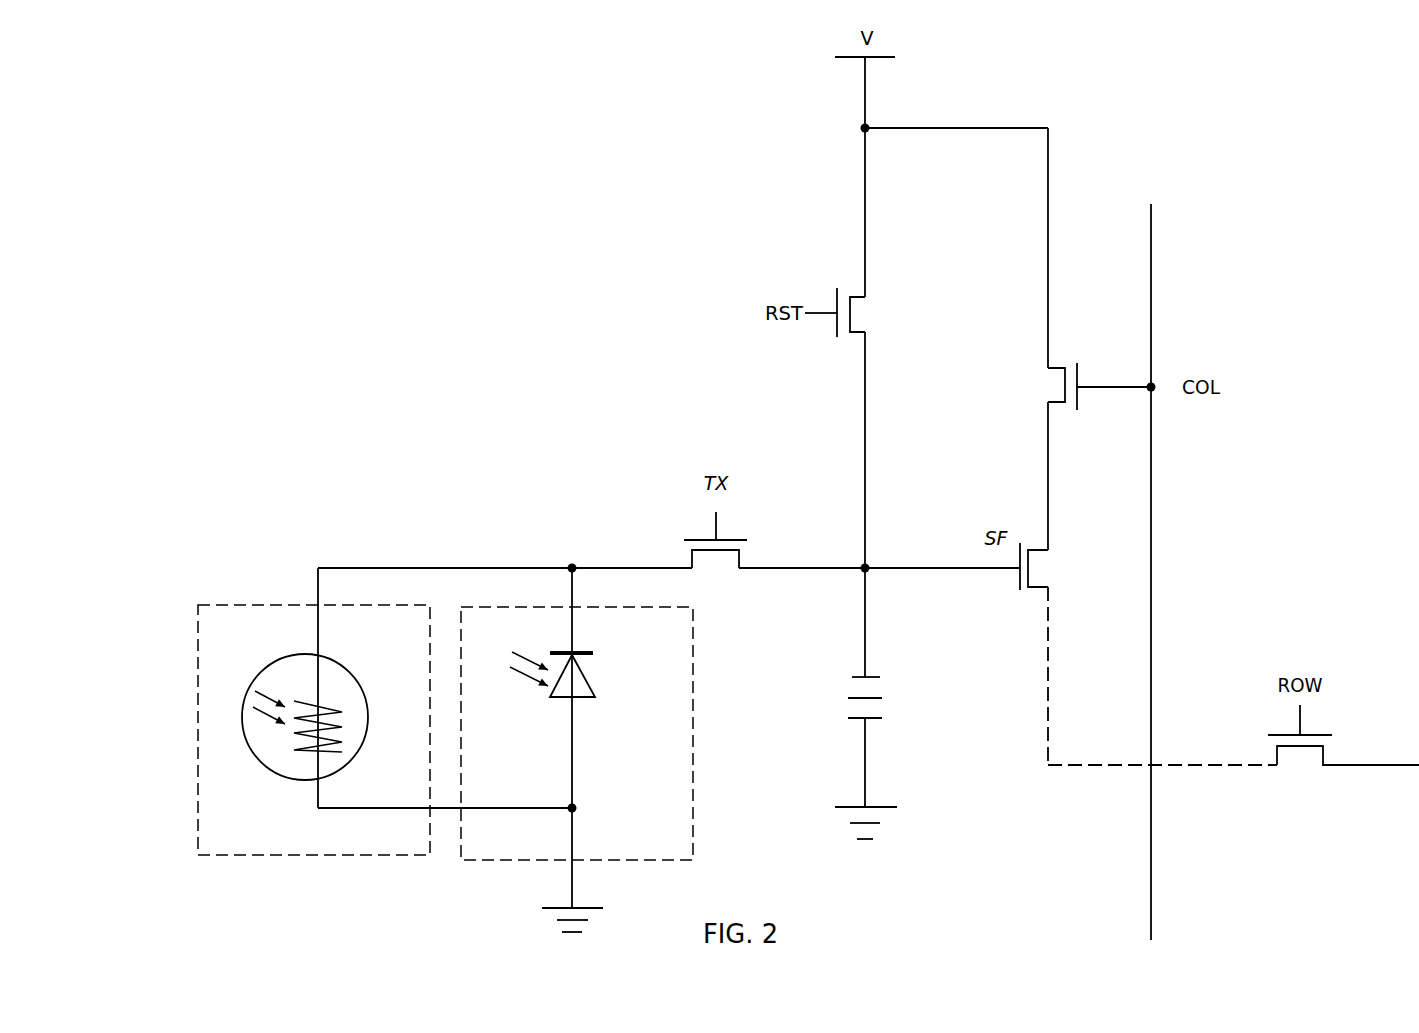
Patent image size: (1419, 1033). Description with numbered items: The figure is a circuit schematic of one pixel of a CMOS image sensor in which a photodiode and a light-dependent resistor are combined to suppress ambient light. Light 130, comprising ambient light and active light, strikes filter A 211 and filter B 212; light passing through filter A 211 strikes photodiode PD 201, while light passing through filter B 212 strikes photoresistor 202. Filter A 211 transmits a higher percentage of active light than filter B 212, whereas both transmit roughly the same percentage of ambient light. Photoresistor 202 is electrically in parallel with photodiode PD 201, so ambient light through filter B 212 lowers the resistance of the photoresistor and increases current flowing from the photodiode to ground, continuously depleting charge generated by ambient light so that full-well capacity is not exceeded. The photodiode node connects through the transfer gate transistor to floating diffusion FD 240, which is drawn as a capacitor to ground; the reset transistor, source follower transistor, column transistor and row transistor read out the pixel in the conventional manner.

The light 130 is at (275, 686).
The photodiode PD 201 is at (593, 685).
The photoresistor LDR 202 is at (245, 745).
The filter A 211 is at (692, 671).
The filter B 212 is at (197, 632).
The floating diffusion FD 240 is at (887, 712).